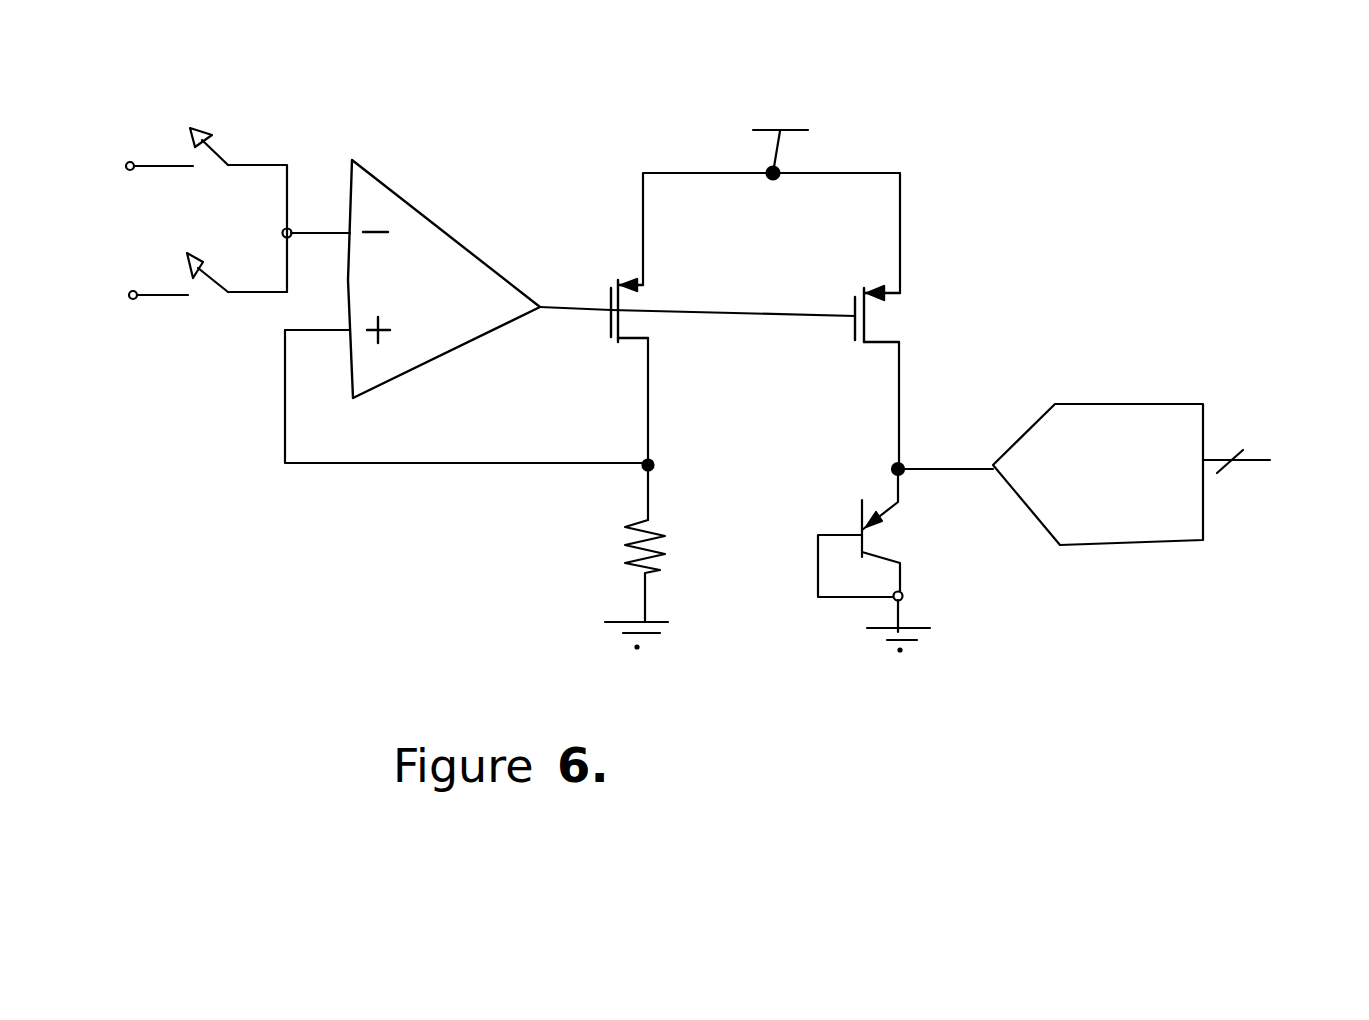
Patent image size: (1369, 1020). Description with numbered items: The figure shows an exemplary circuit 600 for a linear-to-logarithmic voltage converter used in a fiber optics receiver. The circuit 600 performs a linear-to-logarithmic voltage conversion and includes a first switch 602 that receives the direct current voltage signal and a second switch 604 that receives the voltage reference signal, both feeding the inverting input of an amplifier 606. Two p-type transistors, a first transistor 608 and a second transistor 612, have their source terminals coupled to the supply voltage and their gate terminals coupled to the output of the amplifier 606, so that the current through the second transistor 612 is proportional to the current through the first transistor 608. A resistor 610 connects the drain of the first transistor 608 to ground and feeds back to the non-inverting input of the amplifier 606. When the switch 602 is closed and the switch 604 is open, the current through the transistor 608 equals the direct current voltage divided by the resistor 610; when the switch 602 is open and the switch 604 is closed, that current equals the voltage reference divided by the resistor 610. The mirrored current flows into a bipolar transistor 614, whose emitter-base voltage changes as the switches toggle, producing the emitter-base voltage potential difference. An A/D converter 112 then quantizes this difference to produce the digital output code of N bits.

The circuit 600 is at (834, 754).
The switch 602 is at (200, 117).
The switch 604 is at (210, 300).
The amplifier 606 is at (437, 222).
The transistor 608 is at (652, 300).
The resistor 610 is at (613, 548).
The transistor 612 is at (905, 308).
The transistor 614 is at (846, 494).
The A/D converter 112 is at (1107, 403).